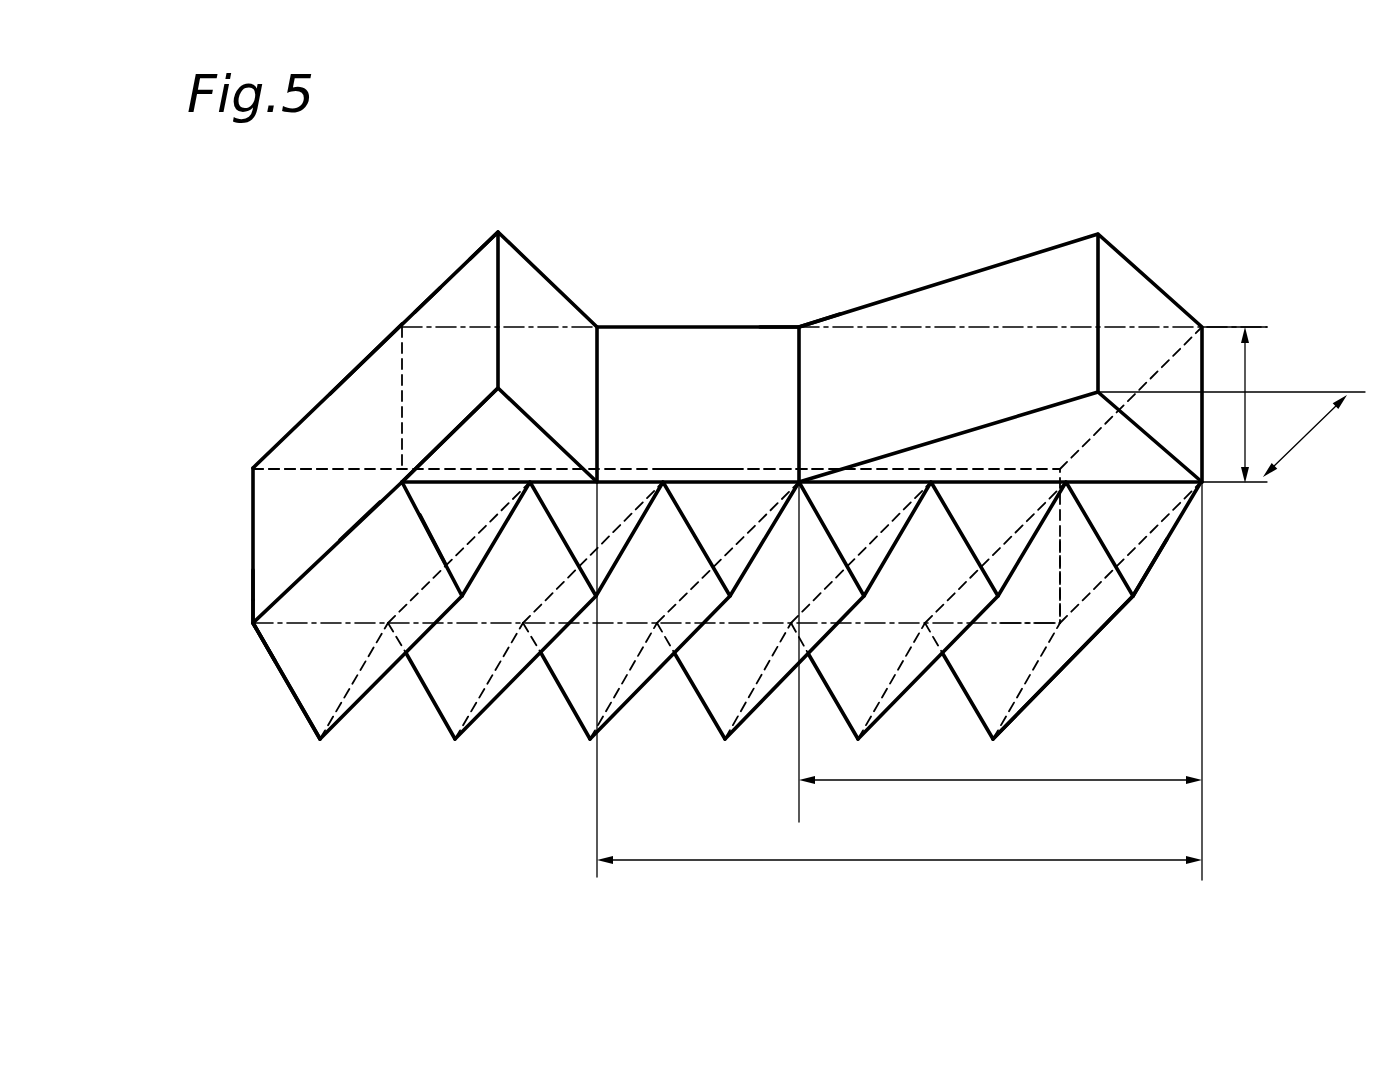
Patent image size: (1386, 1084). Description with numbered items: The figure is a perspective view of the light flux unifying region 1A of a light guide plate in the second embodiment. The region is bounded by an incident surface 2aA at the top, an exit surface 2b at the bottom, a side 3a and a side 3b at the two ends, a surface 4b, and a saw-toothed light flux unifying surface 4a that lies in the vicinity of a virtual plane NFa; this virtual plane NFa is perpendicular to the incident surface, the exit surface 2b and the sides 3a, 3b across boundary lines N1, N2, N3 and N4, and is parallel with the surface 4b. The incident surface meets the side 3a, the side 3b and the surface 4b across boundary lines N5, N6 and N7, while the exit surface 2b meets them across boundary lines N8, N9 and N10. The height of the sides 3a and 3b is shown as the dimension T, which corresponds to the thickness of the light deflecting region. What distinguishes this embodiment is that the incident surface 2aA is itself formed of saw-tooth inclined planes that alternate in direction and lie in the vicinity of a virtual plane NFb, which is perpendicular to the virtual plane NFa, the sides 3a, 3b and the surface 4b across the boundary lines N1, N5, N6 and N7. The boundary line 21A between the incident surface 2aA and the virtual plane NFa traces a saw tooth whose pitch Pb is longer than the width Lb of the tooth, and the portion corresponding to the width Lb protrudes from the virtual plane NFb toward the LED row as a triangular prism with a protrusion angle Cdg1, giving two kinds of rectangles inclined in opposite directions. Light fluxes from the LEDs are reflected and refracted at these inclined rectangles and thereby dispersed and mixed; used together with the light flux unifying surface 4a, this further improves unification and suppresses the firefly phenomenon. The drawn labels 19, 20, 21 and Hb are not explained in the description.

The light flux unifying region 1A is at (328, 306).
The upper prism portion 19 is at (548, 293).
The surface 4b is at (470, 290).
The virtual plane NFb is at (437, 360).
The boundary line N5 is at (400, 375).
The boundary line 21A is at (430, 452).
The exit surface 2b is at (303, 487).
The flat portion 20 is at (640, 475).
The incident surface 2aA is at (685, 353).
The boundary line N10 is at (700, 467).
The boundary line N7 is at (780, 323).
The boundary line N1 is at (742, 477).
The side 3b is at (1182, 377).
The boundary line N6 is at (1203, 360).
The protrusion angle Cdg1 is at (1130, 423).
The height T is at (1256, 405).
The prism height Hb is at (1305, 436).
The lower prism 21 is at (427, 537).
The boundary line N3 is at (360, 523).
The boundary line N8 is at (427, 552).
The virtual plane NFa is at (337, 570).
The side 3a is at (267, 583).
The boundary line N4 is at (1150, 540).
The boundary line N9 is at (1060, 573).
The light flux unifying surface 4a is at (1082, 630).
The boundary line N2 is at (1013, 627).
The width of the saw tooth Lb is at (1000, 799).
The pitch of the saw teeth Pb is at (899, 879).